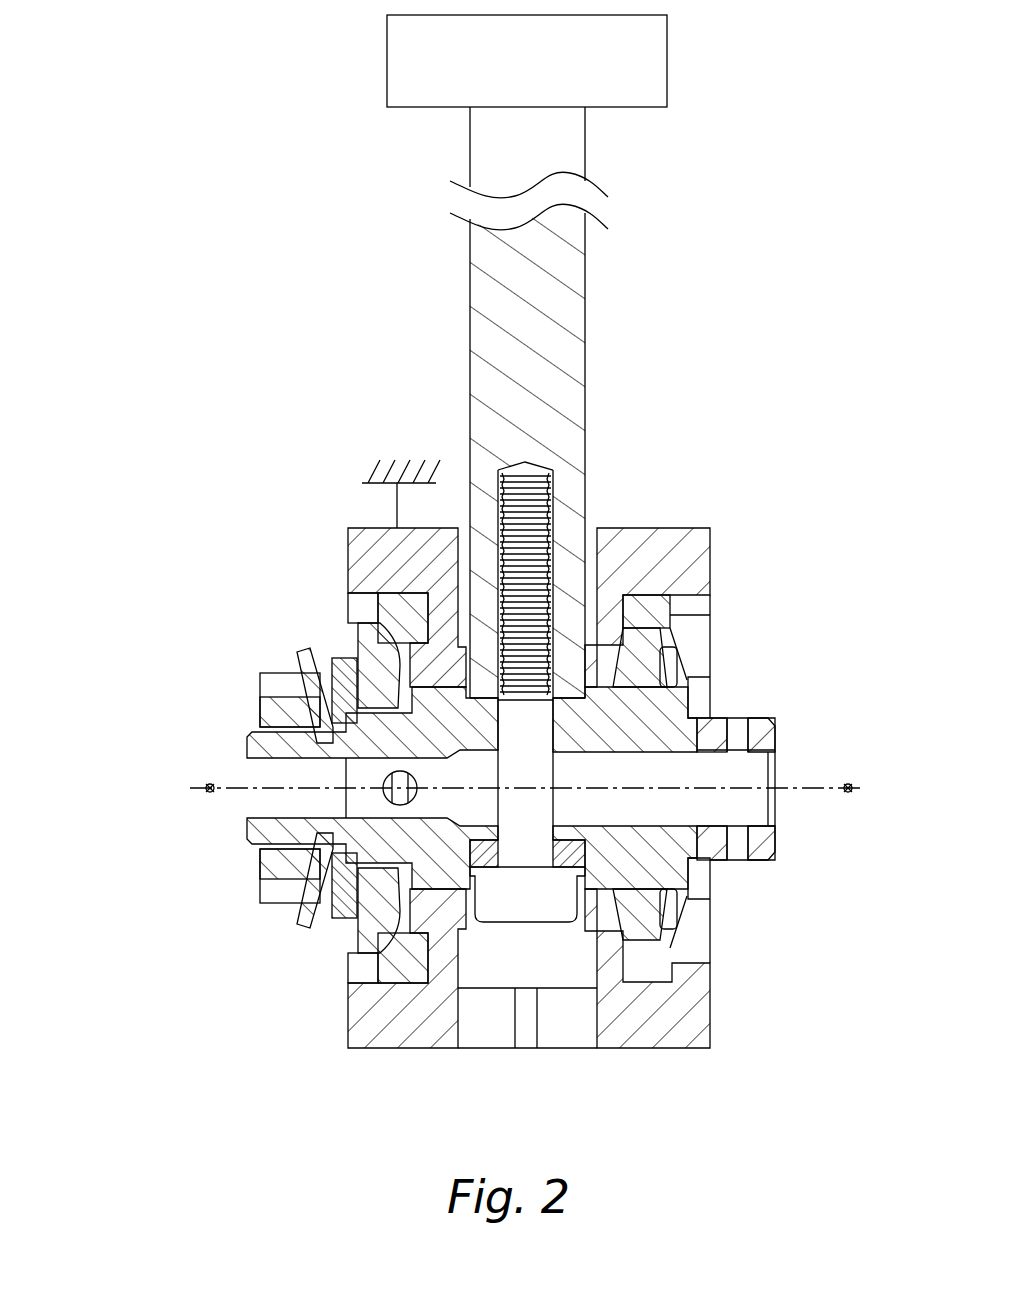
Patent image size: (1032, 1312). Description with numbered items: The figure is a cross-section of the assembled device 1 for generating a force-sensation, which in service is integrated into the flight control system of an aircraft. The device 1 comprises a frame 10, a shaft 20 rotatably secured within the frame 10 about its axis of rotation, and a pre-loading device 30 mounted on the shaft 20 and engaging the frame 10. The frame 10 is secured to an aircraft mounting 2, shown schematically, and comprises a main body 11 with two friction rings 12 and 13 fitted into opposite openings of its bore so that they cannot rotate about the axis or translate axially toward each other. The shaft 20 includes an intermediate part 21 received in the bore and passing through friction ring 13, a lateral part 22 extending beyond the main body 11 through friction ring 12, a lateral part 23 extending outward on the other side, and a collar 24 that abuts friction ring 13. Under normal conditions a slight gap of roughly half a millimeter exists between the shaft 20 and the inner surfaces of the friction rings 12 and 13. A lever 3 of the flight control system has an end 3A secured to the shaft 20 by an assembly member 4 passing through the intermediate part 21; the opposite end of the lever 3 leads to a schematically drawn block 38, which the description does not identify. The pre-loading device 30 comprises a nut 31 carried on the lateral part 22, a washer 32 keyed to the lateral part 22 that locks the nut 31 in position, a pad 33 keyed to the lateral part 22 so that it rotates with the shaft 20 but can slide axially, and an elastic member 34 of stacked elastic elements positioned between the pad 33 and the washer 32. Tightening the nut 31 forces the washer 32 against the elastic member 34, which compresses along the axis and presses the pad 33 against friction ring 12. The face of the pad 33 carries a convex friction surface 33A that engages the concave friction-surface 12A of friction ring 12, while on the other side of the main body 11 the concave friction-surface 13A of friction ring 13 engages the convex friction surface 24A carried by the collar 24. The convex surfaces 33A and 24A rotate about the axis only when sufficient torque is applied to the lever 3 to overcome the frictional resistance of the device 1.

The device for generating a force-sensation 1 is at (240, 1072).
The aircraft mounting 2 is at (380, 440).
The lever 3 is at (593, 272).
The end of lever 3A is at (612, 648).
The assembly member 4 is at (532, 935).
The frame 10 is at (502, 589).
The main body 11 is at (360, 588).
The friction ring 12 is at (357, 575).
The concave friction-surface 12A is at (372, 944).
The friction ring 13 is at (683, 545).
The concave friction-surface 13A is at (690, 626).
The shaft 20 is at (785, 715).
The intermediate part 21 is at (700, 882).
The lateral part 22 is at (285, 776).
The lateral part 23 is at (775, 840).
The collar 24 is at (647, 643).
The convex friction surface 24A is at (595, 666).
The pre-loading device 30 is at (209, 658).
The nut 31 is at (268, 720).
The washer 32 is at (298, 657).
The pad 33 is at (352, 630).
The convex friction surface 33A is at (395, 945).
The elastic member 34 is at (340, 660).
The drive motor 38 is at (380, 48).